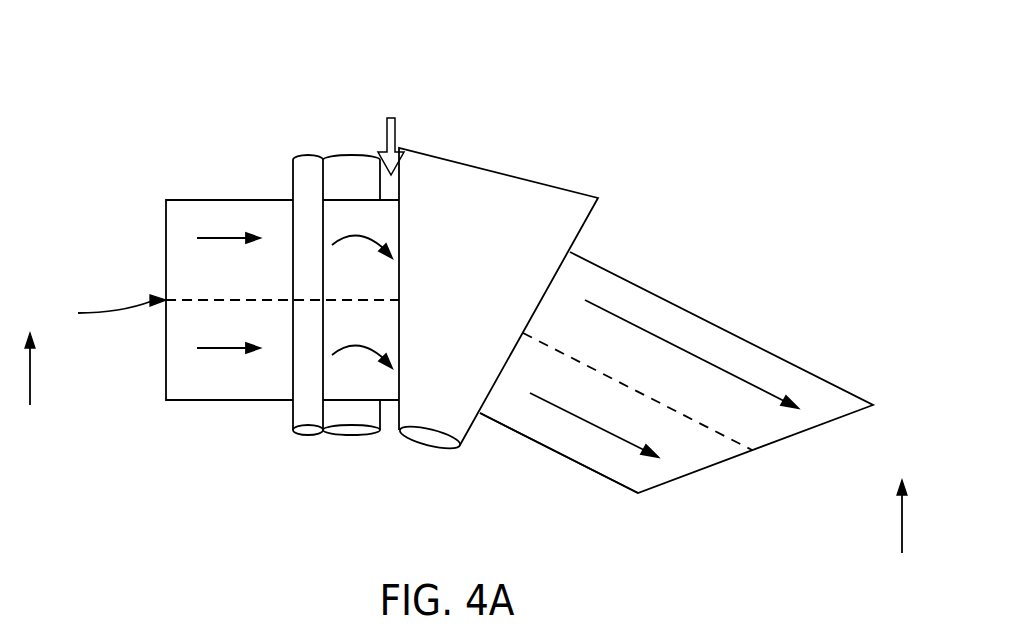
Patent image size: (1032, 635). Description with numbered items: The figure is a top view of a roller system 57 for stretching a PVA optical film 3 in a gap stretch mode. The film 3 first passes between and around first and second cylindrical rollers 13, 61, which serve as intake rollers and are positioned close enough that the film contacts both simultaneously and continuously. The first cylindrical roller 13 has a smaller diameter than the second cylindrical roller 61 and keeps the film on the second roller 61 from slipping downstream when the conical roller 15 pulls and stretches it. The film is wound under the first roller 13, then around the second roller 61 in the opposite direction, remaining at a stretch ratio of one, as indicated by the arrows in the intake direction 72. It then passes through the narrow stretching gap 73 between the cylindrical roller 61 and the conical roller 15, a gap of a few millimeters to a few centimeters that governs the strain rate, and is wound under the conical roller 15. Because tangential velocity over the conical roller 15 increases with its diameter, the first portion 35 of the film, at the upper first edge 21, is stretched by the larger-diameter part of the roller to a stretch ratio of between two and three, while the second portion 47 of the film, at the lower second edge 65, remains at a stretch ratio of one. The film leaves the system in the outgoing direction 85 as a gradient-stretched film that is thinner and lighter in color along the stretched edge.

The web handling system 57 is at (260, 100).
The first edge 21 is at (211, 200).
The stretching gap 73 is at (386, 126).
The conical roller 15 is at (488, 207).
The first portion of the film 35 is at (188, 238).
The film 3 is at (113, 310).
The second portion of the film 47 is at (188, 360).
The first direction 72 is at (29, 384).
The second edge 65 is at (210, 402).
The first cylindrical roller 13 is at (310, 432).
The second cylindrical roller 61 is at (355, 432).
The second direction 85 is at (902, 530).